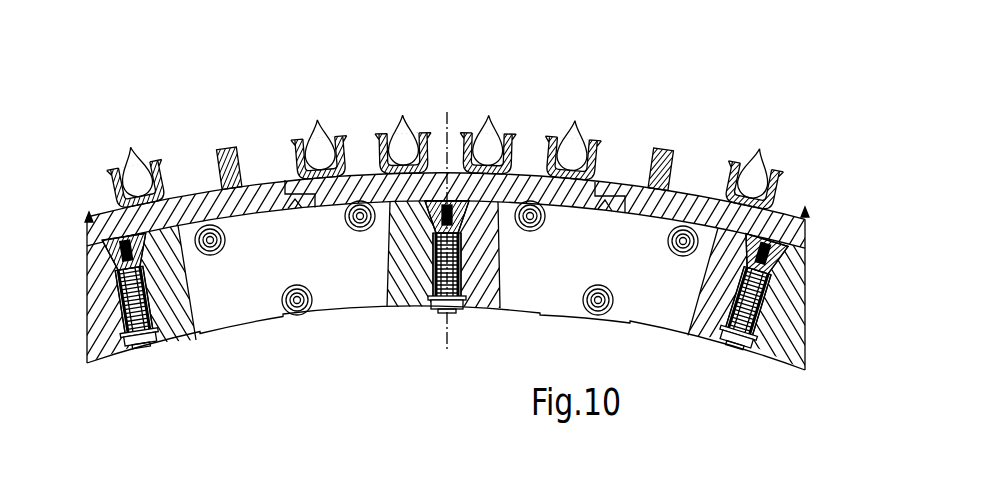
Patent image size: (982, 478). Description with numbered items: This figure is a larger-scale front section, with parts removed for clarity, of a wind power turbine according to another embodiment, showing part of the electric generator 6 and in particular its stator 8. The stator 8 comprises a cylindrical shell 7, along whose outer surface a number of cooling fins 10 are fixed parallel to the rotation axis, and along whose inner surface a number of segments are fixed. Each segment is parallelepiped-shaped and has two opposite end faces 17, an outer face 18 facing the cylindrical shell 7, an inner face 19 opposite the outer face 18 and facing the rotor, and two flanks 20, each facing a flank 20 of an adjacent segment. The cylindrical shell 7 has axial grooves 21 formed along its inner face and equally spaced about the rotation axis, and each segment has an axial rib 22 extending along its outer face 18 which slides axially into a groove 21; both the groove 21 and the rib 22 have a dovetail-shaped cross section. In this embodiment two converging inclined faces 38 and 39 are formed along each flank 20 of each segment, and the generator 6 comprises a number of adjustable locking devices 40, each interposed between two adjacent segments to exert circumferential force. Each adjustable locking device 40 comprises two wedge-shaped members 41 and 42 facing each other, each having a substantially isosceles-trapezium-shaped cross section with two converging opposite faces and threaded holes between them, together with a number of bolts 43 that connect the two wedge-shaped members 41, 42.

The electric generator 6 is at (690, 95).
The cylindrical shell 7 is at (688, 185).
The stator 8 is at (810, 313).
The cooling fins 10 is at (131, 147).
The end faces 17 is at (252, 300).
The outer face 18 is at (89, 214).
The inner face 19 is at (111, 363).
The flanks 20 is at (150, 288).
The axial grooves 21 is at (291, 208).
The axial rib 22 is at (264, 190).
The inclined face 38 is at (115, 240).
The inclined face 39 is at (150, 345).
The adjustable locking device 40 is at (160, 352).
The wedge-shaped member 41 is at (122, 244).
The wedge-shaped member 42 is at (180, 318).
The bolts 43 is at (160, 299).